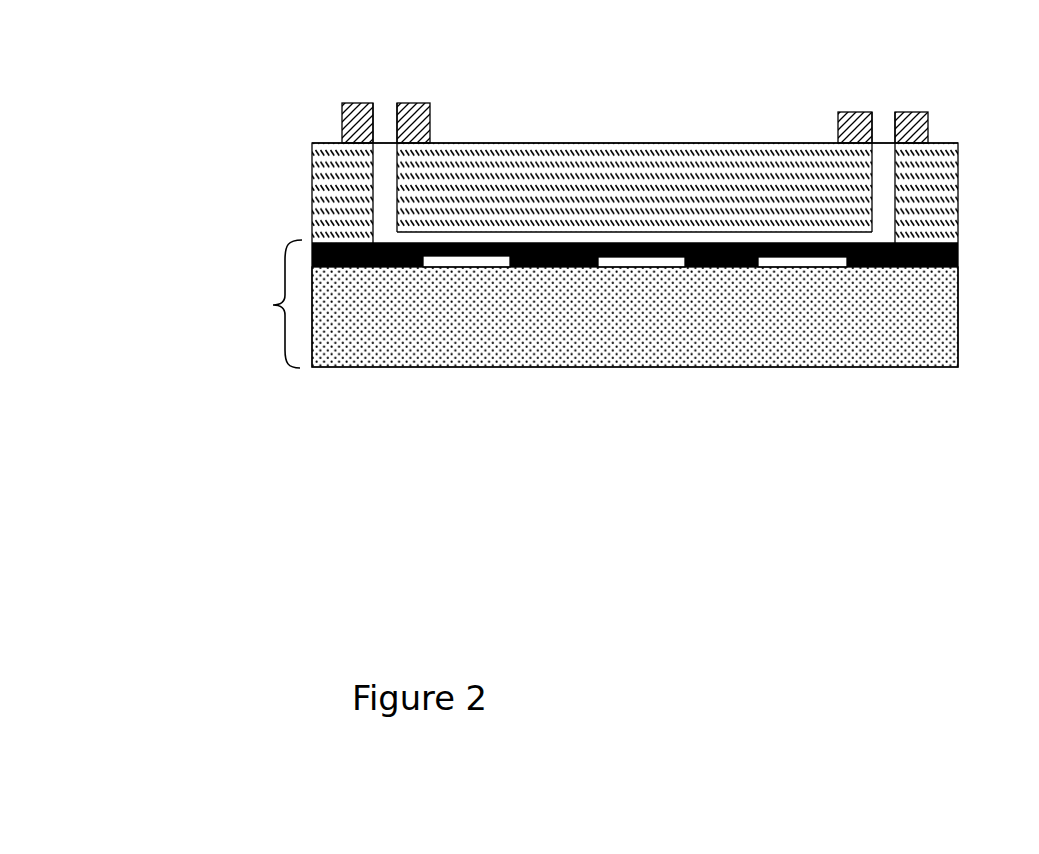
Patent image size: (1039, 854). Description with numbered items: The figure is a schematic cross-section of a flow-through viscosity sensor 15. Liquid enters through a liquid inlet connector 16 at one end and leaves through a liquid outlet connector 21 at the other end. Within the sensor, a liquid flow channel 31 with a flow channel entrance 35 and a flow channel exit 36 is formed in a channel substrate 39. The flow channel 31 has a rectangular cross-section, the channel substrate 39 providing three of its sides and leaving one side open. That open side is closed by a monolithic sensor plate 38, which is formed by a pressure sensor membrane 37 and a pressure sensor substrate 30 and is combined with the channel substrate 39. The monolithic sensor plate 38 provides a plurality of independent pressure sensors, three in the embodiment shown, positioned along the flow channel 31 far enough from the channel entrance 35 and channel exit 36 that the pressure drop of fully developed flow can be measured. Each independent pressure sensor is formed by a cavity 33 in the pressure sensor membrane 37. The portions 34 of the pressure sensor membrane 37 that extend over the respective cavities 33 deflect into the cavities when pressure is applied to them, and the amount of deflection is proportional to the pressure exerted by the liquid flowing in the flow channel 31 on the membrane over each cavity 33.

The flow-through viscosity sensor 15 is at (378, 410).
The liquid inlet connector 16 is at (340, 118).
The liquid outlet connector 21 is at (925, 128).
The pressure sensor substrate 30 is at (748, 343).
The liquid flow channel 31 is at (707, 237).
The cavity 33 is at (807, 262).
The portions of the pressure sensor membrane 34 is at (820, 243).
The flow channel entrance 35 is at (383, 152).
The flow channel exit 36 is at (883, 155).
The pressure sensor membrane 37 is at (550, 243).
The monolithic sensor plate 38 is at (273, 305).
The channel substrate 39 is at (508, 152).